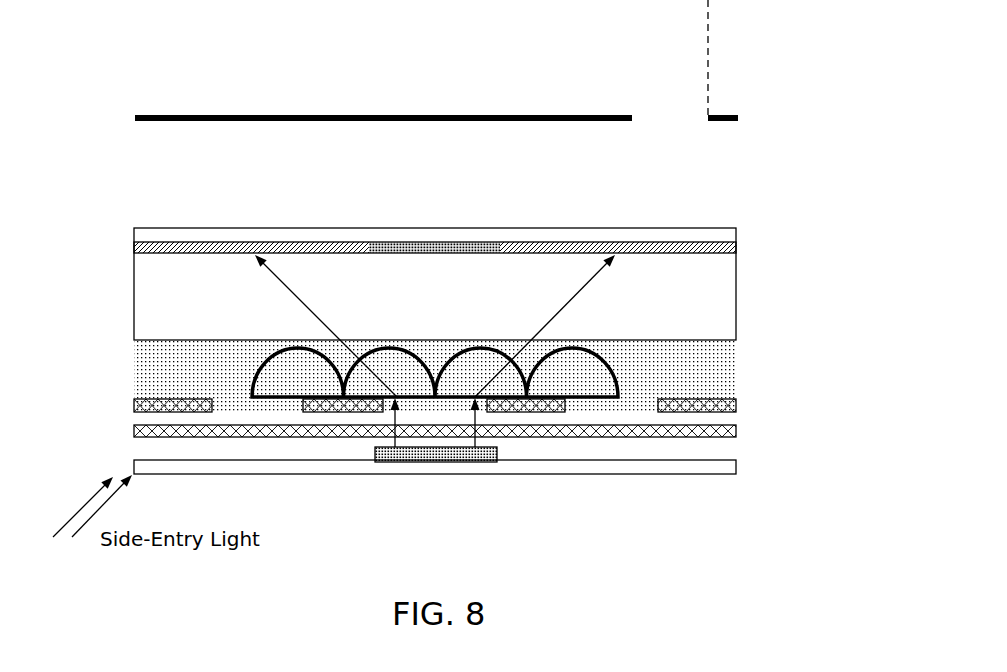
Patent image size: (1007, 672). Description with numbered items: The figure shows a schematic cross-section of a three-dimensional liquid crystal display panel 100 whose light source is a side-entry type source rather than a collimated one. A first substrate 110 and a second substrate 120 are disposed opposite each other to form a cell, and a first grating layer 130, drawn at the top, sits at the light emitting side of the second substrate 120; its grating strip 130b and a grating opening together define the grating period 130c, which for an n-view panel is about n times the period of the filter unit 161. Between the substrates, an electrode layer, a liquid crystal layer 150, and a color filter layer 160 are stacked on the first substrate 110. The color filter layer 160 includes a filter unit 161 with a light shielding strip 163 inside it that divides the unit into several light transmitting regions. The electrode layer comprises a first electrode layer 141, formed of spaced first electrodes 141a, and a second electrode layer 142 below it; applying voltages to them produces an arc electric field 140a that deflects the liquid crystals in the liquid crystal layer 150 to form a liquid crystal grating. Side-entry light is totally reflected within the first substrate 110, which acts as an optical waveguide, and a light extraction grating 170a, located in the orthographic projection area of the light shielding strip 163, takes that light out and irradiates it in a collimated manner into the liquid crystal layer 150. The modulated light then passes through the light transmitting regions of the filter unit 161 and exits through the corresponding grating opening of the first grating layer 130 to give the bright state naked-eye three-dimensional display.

The 3D liquid crystal display panel 100 is at (481, 347).
The first substrate 110 is at (478, 448).
The second substrate 120 is at (478, 265).
The first grating layer 130 is at (776, 96).
The grating strip 130b is at (383, 83).
The grating period 130c is at (692, 20).
The arc electric field 140a is at (435, 274).
The first electrode layer 141 is at (478, 451).
The first electrode 141a is at (586, 471).
The second electrode layer 142 is at (435, 484).
The liquid crystal layer 150 is at (478, 365).
The color filter layer 160 is at (481, 206).
The filter unit 161 is at (435, 202).
The light shielding strip 163 is at (434, 202).
The light extraction grating 170a is at (477, 495).